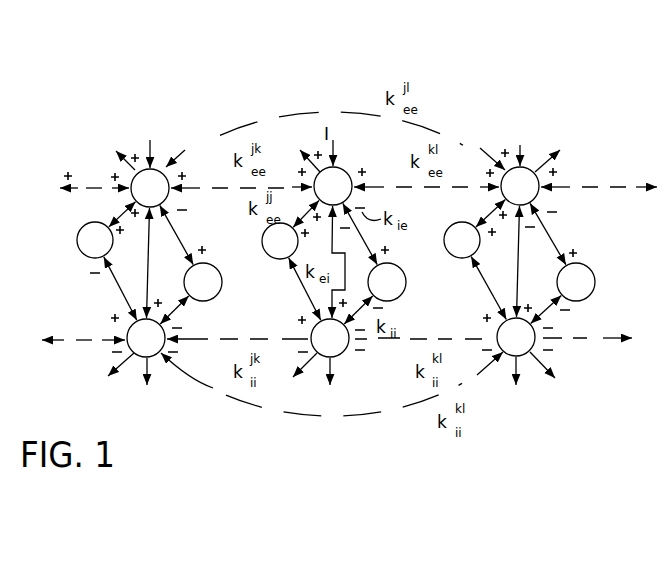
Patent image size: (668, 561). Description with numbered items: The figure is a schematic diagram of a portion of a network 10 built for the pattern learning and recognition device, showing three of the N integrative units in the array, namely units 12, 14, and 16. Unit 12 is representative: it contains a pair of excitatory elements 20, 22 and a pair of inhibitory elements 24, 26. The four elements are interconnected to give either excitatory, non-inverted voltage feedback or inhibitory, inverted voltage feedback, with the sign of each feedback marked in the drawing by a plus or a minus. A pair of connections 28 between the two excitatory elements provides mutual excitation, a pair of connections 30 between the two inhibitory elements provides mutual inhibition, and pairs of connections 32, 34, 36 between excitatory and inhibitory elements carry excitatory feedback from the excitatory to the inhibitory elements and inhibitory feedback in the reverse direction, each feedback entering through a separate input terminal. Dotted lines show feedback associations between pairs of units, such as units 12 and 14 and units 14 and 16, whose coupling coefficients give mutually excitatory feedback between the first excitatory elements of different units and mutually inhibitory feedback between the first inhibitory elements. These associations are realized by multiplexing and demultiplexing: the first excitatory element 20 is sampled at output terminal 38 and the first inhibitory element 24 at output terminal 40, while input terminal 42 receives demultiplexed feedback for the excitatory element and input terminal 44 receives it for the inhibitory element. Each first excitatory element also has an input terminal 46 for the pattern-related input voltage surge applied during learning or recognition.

The network 10 is at (480, 135).
The integrative unit 12 is at (70, 288).
The integrative unit 14 is at (290, 291).
The integrative unit 16 is at (477, 289).
The excitatory element 20 is at (163, 165).
The excitatory element 22 is at (77, 241).
The inhibitory element 24 is at (128, 356).
The inhibitory element 26 is at (268, 244).
The pair of connections 28 is at (122, 213).
The pair of connections 30 is at (185, 309).
The pair of connections 32 is at (164, 263).
The pair of connections 34 is at (176, 225).
The pair of connections 36 is at (118, 296).
The output terminal 38 is at (115, 166).
The output terminal 40 is at (117, 354).
The input terminal 42 is at (183, 181).
The input terminal 44 is at (188, 340).
The input terminal 46 is at (147, 142).